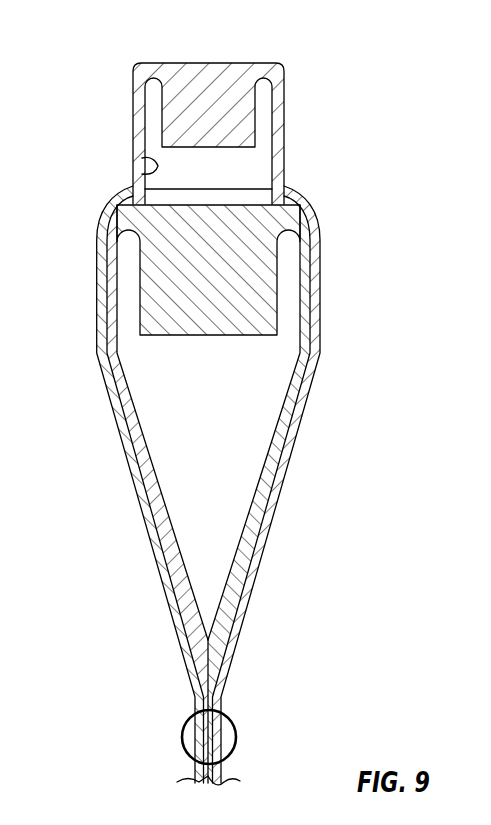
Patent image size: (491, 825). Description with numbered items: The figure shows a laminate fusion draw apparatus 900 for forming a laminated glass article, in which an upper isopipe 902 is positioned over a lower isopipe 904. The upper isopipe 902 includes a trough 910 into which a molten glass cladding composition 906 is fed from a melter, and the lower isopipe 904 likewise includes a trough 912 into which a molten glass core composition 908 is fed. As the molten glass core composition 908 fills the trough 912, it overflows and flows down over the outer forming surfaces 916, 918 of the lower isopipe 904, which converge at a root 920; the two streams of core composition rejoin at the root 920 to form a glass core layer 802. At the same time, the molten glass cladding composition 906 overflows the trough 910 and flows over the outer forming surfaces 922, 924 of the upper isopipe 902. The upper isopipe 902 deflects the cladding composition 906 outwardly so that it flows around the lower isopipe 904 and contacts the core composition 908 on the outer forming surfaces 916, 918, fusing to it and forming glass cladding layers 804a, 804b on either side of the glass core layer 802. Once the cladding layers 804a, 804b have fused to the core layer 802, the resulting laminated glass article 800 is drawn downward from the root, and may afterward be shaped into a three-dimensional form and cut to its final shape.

The laminate fusion draw apparatus 900 is at (340, 88).
The upper isopipe 902 is at (270, 77).
The lower isopipe 904 is at (288, 265).
The molten glass cladding composition 906 is at (210, 72).
The molten glass core composition 908 is at (288, 203).
The trough 910 is at (153, 113).
The trough 912 is at (143, 278).
The outer forming surface 916 is at (278, 427).
The outer forming surface 918 is at (135, 412).
The root 920 is at (212, 653).
The outer forming surface 922 is at (152, 170).
The outer forming surface 924 is at (278, 127).
The laminated glass article 800 is at (187, 755).
The glass core layer 802 is at (200, 697).
The glass cladding layer 804a is at (190, 745).
The glass cladding layer 804b is at (218, 735).